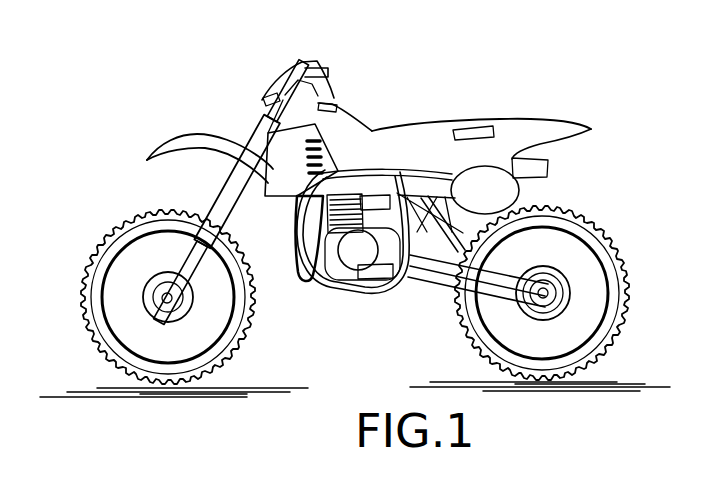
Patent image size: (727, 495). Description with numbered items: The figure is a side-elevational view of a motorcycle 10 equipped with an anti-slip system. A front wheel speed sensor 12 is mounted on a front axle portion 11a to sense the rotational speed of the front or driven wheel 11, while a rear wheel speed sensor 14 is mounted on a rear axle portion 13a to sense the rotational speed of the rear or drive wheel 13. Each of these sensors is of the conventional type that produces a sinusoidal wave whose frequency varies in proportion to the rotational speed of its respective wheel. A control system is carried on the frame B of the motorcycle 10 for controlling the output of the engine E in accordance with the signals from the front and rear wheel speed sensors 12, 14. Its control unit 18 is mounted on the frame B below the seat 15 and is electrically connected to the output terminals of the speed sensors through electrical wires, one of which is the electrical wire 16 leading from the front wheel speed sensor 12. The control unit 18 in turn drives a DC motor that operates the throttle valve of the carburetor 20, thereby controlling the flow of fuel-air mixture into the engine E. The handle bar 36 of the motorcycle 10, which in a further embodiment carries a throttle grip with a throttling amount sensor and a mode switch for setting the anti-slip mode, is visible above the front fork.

The motorcycle 10 is at (198, 123).
The front wheel 11 is at (95, 285).
The front axle portion 11a is at (152, 312).
The front wheel speed sensor 12 is at (161, 286).
The rear wheel 13 is at (625, 305).
The rear axle portion 13a is at (548, 306).
The rear wheel speed sensor 14 is at (545, 276).
The seat 15 is at (435, 136).
The electrical wire 16 is at (212, 193).
The control unit 18 is at (485, 127).
The carburetor 20 is at (380, 200).
The handle bar 36 is at (293, 73).
The frame B is at (404, 198).
The engine E is at (355, 270).